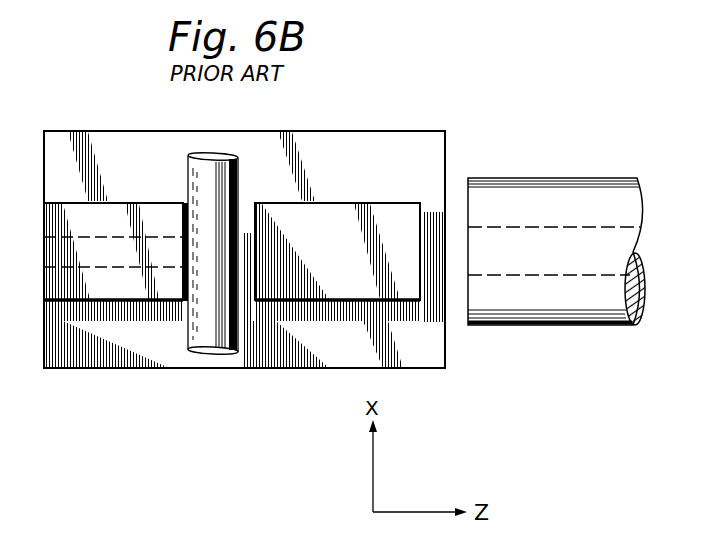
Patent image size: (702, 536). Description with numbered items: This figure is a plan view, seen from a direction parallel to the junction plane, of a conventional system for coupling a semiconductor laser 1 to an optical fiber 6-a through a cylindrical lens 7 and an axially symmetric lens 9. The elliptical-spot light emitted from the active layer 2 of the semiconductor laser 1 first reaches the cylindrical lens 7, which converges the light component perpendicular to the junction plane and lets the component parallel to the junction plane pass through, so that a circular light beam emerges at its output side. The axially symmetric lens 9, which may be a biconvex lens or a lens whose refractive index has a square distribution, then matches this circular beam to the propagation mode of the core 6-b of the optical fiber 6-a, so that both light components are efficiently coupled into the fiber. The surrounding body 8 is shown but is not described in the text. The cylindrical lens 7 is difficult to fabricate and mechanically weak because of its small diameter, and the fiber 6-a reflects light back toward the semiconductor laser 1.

The holder / substrate 8 is at (348, 132).
The semiconductor laser 1 is at (126, 201).
The active layer 2 is at (131, 262).
The axially symmetric lens 9 is at (351, 203).
The cylindrical lens 7 is at (238, 182).
The optical fiber 6-a is at (577, 178).
The core 6-b is at (641, 251).